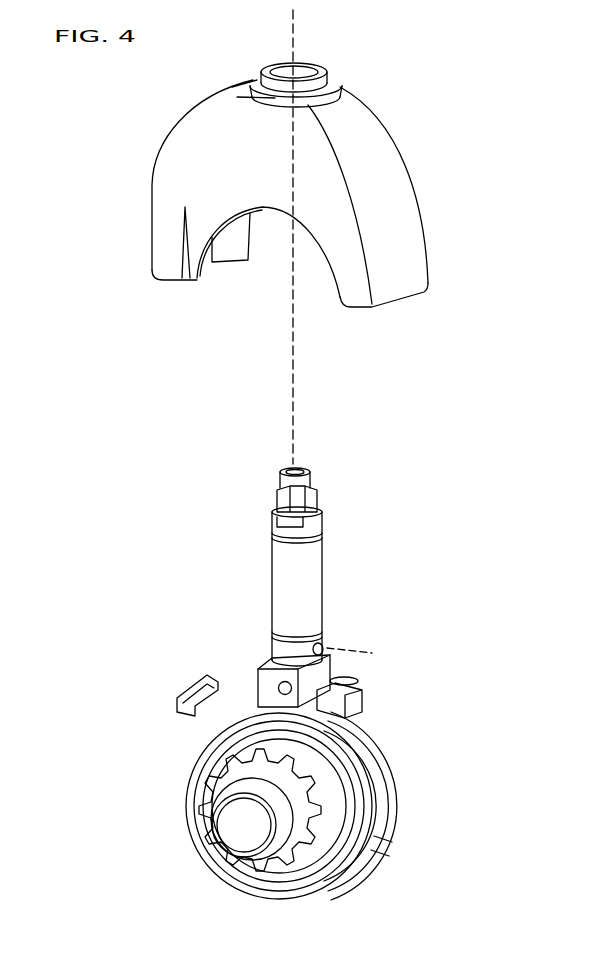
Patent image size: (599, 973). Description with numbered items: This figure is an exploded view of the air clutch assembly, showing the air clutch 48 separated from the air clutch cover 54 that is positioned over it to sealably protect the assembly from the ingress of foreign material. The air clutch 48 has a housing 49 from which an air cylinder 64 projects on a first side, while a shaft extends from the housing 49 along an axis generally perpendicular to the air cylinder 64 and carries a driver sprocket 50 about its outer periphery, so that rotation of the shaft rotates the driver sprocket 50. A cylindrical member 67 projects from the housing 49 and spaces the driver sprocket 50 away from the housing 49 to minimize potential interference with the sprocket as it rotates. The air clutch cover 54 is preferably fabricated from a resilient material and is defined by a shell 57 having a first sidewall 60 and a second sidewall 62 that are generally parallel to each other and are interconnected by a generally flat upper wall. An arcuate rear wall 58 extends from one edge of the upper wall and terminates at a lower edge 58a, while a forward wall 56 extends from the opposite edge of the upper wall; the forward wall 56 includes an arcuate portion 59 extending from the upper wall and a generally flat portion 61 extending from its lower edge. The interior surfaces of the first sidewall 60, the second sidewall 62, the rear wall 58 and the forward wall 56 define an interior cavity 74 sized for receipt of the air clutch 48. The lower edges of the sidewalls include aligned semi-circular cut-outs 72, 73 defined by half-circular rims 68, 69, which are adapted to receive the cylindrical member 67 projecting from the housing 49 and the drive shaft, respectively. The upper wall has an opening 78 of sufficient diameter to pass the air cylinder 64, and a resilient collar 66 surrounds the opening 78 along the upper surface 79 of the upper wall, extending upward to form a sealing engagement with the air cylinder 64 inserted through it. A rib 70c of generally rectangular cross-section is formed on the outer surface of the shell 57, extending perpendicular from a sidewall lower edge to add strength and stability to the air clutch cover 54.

The air clutch 48 is at (363, 758).
The housing 49 is at (343, 887).
The driver sprocket 50 is at (300, 843).
The air clutch cover 54 is at (303, 138).
The forward wall 56 is at (148, 163).
The shell 57 is at (169, 129).
The rear wall 58 is at (403, 223).
The lower edge of rear wall 58a is at (400, 298).
The arcuate portion 59 is at (198, 102).
The first sidewall 60 is at (279, 163).
The flat portion 61 is at (167, 220).
The second sidewall 62 is at (413, 164).
The air cylinder 64 is at (302, 588).
The resilient collar 66 is at (315, 67).
The cylindrical member 67 is at (287, 747).
The half-circular rim 68 is at (282, 212).
The half-circular rim 69 is at (248, 237).
The third rib 70c is at (180, 270).
The semi-circular cut-out 72 is at (212, 262).
The semi-circular cut-out 73 is at (258, 247).
The interior cavity 74 is at (310, 260).
The opening 78 is at (288, 73).
The upper surface 79 is at (240, 92).